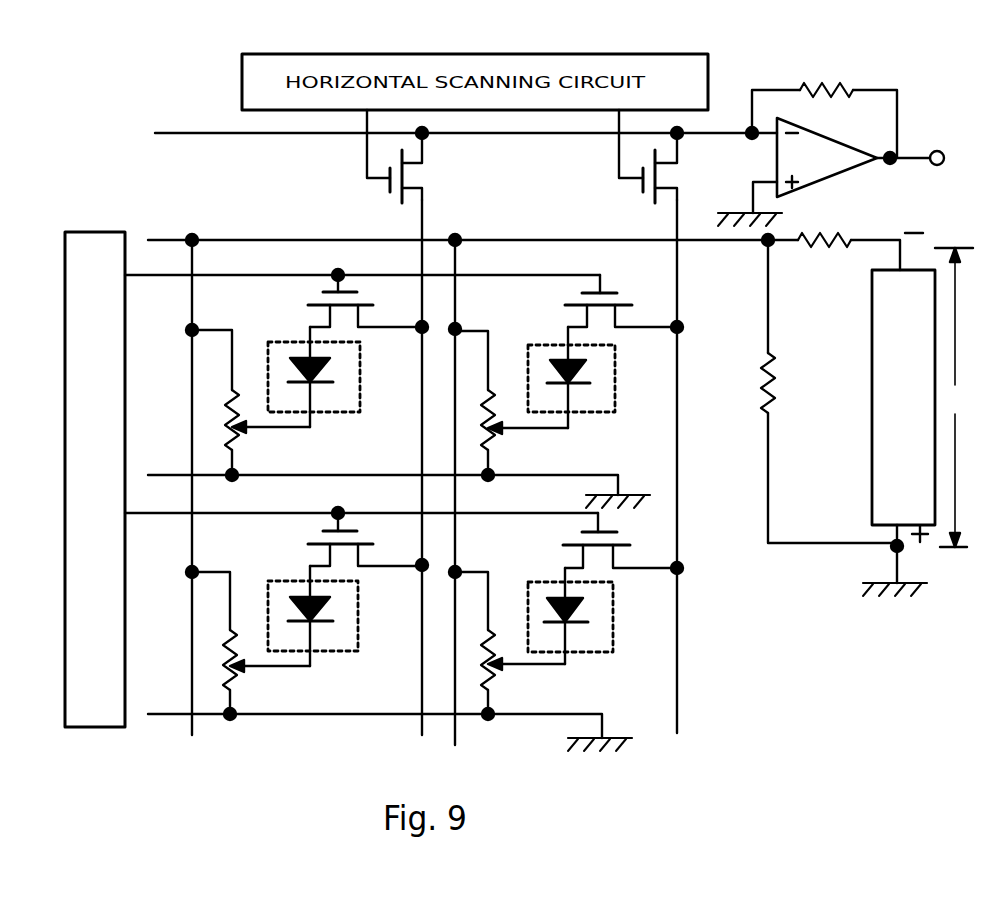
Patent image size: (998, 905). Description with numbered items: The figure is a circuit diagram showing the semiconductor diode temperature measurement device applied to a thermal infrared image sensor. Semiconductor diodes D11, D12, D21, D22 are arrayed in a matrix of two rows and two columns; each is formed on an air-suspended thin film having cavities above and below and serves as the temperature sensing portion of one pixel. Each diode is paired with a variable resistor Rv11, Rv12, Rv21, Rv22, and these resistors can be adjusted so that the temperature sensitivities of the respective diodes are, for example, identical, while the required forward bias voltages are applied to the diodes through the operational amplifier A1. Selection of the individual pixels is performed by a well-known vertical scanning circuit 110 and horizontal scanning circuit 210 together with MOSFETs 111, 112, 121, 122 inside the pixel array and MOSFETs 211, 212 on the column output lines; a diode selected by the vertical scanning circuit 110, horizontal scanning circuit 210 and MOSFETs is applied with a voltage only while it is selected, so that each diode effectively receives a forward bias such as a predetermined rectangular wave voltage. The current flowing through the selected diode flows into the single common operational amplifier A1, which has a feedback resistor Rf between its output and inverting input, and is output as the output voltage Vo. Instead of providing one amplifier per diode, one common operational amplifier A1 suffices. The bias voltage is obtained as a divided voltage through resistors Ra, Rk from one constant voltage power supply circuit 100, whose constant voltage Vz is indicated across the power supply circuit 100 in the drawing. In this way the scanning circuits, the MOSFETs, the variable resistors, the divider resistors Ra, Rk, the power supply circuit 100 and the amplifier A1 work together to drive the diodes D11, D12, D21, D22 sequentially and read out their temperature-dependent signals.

The horizontal scanning circuit 210 is at (242, 90).
The MOSFET 212 is at (367, 166).
The MOSFET 211 is at (619, 166).
The MOSFET 112 is at (336, 301).
The MOSFET 111 is at (593, 301).
The MOSFET 122 is at (336, 539).
The MOSFET 121 is at (593, 540).
The vertical scanning circuit 110 is at (97, 637).
The constant voltage power supply circuit 100 is at (882, 403).
The semiconductor diode D12 is at (327, 377).
The semiconductor diode D11 is at (585, 377).
The semiconductor diode D22 is at (325, 616).
The semiconductor diode D21 is at (587, 616).
The variable resistor Rv12 is at (248, 402).
The variable resistor Rv11 is at (511, 406).
The variable resistor Rv22 is at (248, 643).
The variable resistor Rv21 is at (510, 646).
The feedback resistor Rf is at (824, 101).
The resistor Ra is at (849, 262).
The resistor Rk is at (806, 391).
The operational amplifier A1 is at (827, 157).
The output voltage Vo is at (910, 143).
The constant voltage Vz is at (954, 397).